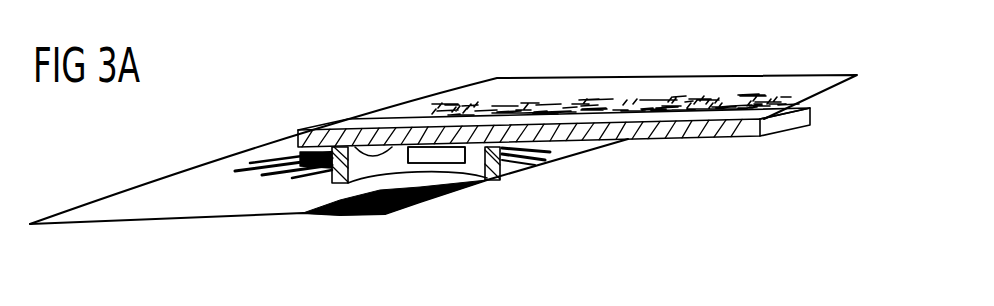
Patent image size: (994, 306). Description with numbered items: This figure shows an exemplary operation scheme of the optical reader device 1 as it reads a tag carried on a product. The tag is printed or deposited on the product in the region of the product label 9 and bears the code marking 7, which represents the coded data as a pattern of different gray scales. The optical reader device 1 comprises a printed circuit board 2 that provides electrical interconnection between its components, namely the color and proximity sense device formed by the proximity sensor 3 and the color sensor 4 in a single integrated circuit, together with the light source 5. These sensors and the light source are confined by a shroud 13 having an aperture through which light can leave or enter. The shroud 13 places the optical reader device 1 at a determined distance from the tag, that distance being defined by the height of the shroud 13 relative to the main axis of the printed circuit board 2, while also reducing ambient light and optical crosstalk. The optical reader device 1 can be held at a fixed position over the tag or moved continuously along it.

The optical reader device 1 is at (790, 125).
The printed circuit board 2 is at (678, 138).
The proximity sensor 3 is at (435, 160).
The color sensor 4 is at (436, 155).
The light source 5 is at (380, 146).
The code marking 7 is at (357, 207).
The product label 9 is at (216, 225).
The shroud 13 is at (496, 176).